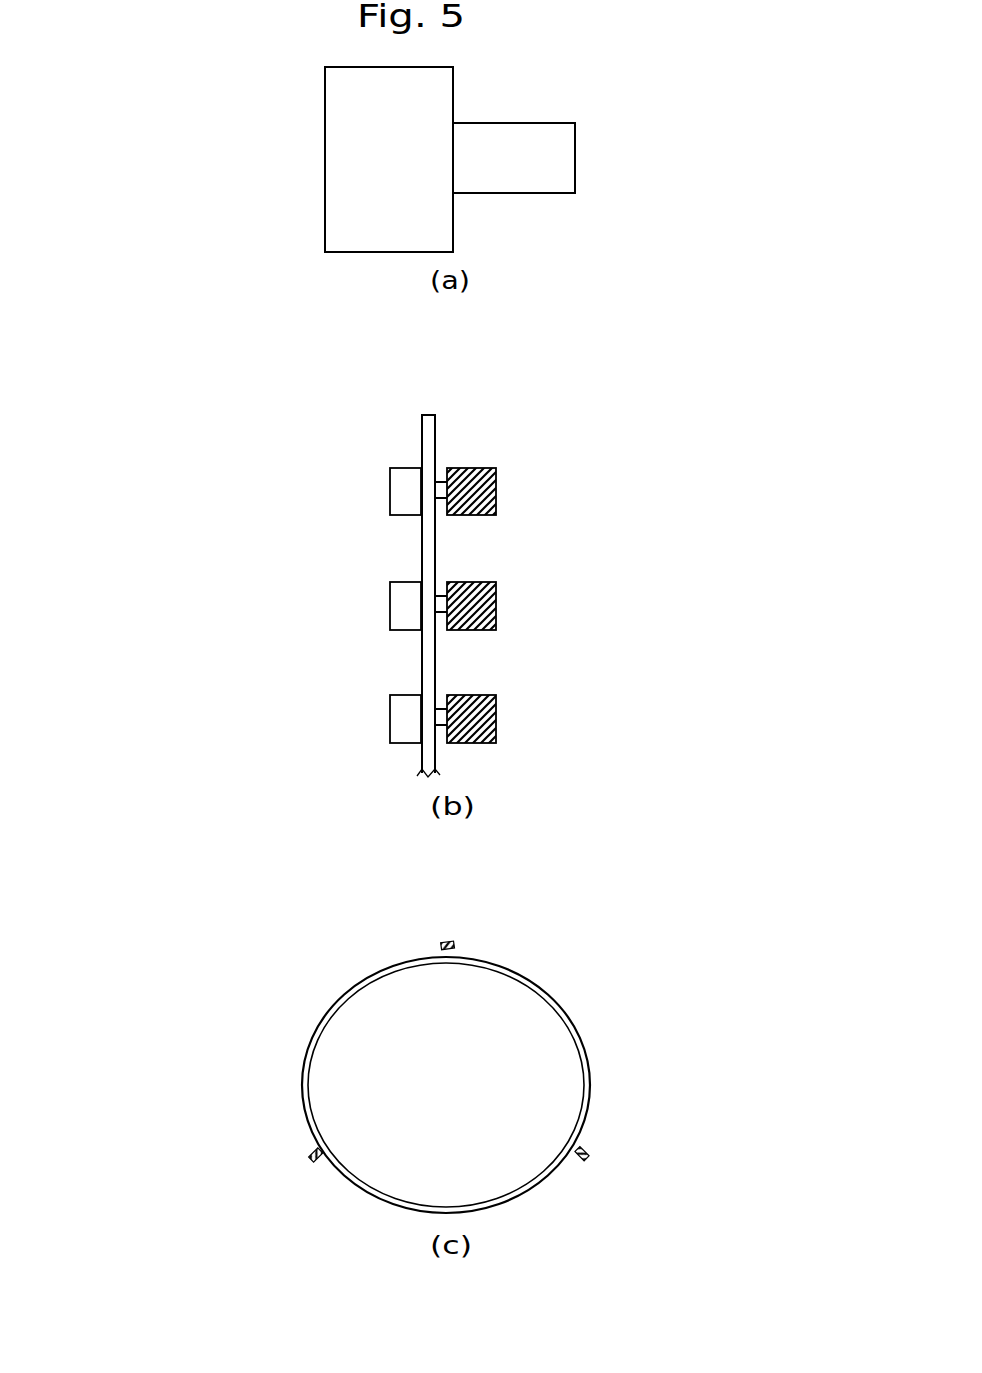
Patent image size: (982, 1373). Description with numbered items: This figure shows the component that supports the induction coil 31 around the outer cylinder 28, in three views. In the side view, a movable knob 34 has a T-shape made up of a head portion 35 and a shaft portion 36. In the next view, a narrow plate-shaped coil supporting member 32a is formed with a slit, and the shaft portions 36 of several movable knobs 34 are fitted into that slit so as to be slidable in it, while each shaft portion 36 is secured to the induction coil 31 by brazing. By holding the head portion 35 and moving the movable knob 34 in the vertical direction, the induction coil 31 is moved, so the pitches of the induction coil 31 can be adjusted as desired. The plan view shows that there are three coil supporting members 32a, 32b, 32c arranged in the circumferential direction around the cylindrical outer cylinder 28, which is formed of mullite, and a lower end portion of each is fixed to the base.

The movable knob 34 is at (341, 159).
The head portion 35 is at (367, 203).
The shaft portion 36 is at (557, 162).
The coil supporting member 32a is at (440, 943).
The coil supporting member 32b is at (592, 1154).
The coil supporting member 32c is at (308, 1156).
The induction coil 31 is at (498, 487).
The outer cylinder 28 is at (628, 1037).